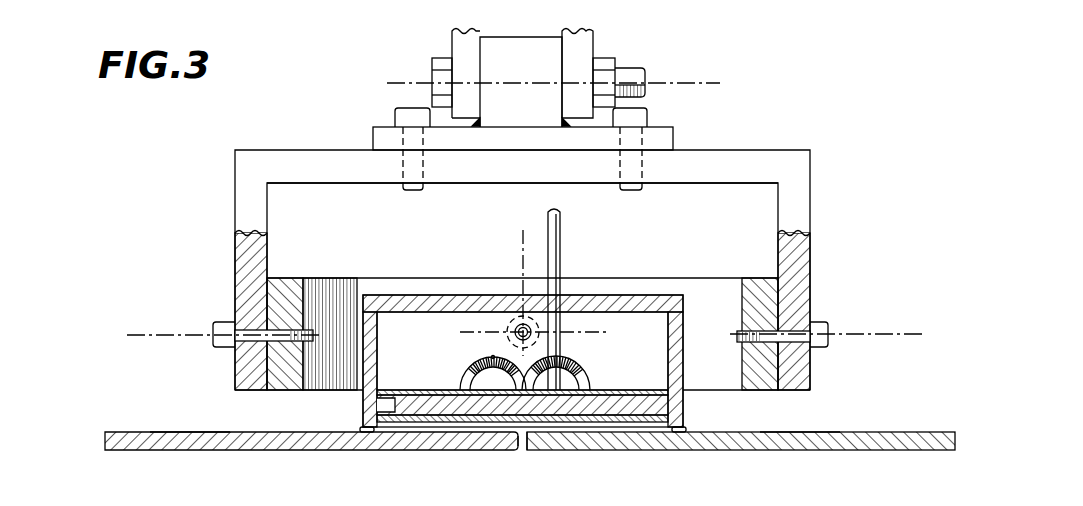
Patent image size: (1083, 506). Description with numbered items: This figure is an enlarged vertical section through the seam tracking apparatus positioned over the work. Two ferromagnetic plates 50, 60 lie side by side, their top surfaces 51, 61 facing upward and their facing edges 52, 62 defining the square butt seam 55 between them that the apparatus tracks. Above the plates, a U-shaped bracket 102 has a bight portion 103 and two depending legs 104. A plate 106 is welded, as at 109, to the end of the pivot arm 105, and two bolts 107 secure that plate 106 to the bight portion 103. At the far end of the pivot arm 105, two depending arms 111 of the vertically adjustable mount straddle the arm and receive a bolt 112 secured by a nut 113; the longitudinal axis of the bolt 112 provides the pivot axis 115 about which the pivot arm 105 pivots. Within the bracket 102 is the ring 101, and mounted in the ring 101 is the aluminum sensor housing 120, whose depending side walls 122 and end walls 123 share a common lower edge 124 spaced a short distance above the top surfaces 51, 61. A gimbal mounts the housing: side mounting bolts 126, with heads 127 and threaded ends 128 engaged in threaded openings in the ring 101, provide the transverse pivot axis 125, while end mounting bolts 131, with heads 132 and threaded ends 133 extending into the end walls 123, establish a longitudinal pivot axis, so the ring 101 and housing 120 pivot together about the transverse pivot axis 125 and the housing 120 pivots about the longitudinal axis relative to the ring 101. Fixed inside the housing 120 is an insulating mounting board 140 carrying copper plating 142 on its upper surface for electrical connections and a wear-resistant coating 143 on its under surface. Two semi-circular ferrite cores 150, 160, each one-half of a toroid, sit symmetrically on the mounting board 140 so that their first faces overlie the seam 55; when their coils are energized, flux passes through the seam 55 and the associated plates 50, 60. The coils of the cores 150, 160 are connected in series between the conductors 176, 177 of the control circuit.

The plate 50 is at (125, 430).
The top surface 51 is at (190, 432).
The facing edge 52 is at (517, 450).
The seam 55 is at (523, 455).
The plate 60 is at (882, 430).
The top surface 61 is at (822, 432).
The facing edge 62 is at (535, 452).
The ring 101 is at (287, 285).
The U-shaped bracket 102 is at (232, 168).
The bight portion 103 is at (278, 160).
The depending legs 104 is at (248, 252).
The pivot arm 105 is at (516, 48).
The plate 106 is at (373, 133).
The bolts 107 is at (397, 108).
The weld 109 is at (563, 123).
The depending arms 111 is at (460, 43).
The bolt 112 is at (433, 63).
The nut 113 is at (607, 62).
The pivot axis 115 is at (708, 86).
The sensor housing 120 is at (597, 293).
The side walls 122 is at (686, 364).
The end walls 123 is at (648, 360).
The lower edge 124 is at (365, 432).
The transverse pivot axis 125 is at (142, 334).
The side mounting bolts 126 is at (250, 343).
The heads 127 is at (222, 327).
The threaded ends 128 is at (283, 333).
The end mounting bolts 131 is at (513, 331).
The heads 132 is at (518, 315).
The threaded ends 133 is at (505, 354).
The mounting board 140 is at (383, 406).
The copper plating 142 is at (404, 397).
The wear-resistant coating 143 is at (403, 425).
The ferrite core 150 is at (458, 368).
The ferrite core 160 is at (592, 376).
The conductor 176 is at (498, 292).
The conductor 177 is at (548, 213).